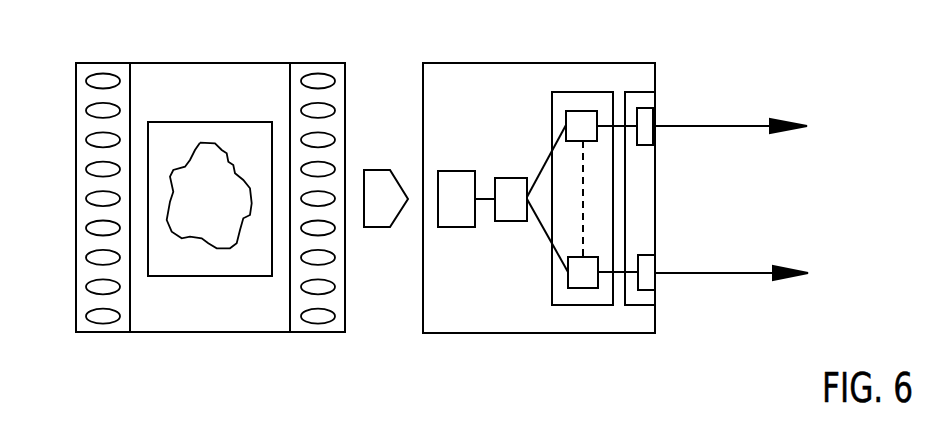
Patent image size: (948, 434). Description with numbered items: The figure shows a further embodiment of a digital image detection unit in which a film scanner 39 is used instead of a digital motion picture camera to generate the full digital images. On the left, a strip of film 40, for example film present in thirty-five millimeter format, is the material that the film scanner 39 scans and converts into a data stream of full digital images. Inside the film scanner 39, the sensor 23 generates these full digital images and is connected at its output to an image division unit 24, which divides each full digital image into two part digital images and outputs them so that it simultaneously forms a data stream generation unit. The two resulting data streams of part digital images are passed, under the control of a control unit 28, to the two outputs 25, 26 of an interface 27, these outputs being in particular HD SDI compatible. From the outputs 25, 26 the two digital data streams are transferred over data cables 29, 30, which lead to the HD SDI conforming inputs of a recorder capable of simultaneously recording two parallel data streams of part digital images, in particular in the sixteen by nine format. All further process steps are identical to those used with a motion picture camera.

The image frame 40 is at (190, 75).
The film scanner 39 is at (586, 75).
The sensor 23 is at (460, 167).
The image division unit 24 is at (510, 175).
The control unit 28 is at (563, 296).
The interface 27 is at (645, 188).
The first output 25 is at (651, 116).
The second output 26 is at (651, 265).
The first data cable 29 is at (745, 125).
The second data cable 30 is at (747, 275).